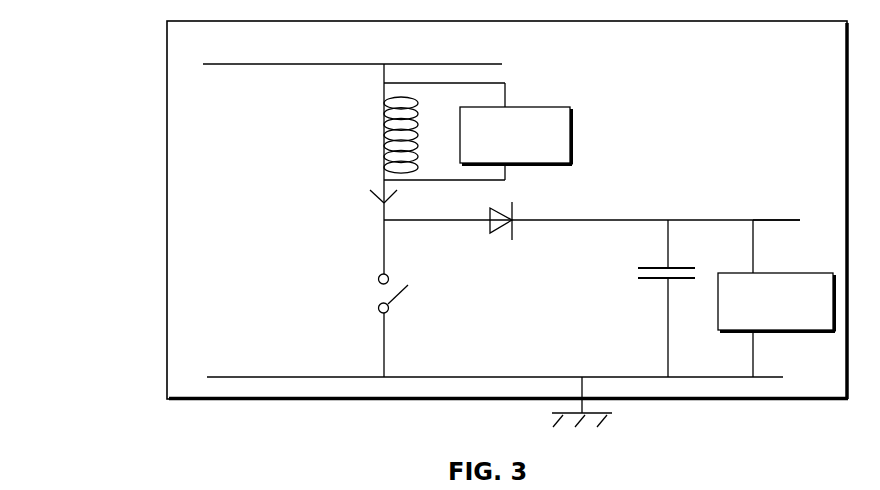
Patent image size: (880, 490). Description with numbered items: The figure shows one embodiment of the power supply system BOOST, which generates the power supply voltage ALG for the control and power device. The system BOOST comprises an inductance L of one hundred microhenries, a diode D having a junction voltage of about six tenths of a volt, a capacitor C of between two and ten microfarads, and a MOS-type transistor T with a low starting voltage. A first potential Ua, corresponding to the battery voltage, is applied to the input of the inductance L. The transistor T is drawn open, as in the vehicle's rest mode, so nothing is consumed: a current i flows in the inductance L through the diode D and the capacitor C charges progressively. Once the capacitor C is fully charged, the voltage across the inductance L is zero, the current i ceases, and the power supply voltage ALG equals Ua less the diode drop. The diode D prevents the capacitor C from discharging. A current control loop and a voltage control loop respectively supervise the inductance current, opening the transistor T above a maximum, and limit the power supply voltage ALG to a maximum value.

The power supply system BOOST is at (167, 80).
The first potential Ua is at (352, 46).
The inductance L is at (380, 135).
The current i is at (388, 199).
The diode D is at (513, 208).
The capacitor C is at (644, 298).
The power supply voltage ALG is at (771, 203).
The transistor T is at (373, 293).